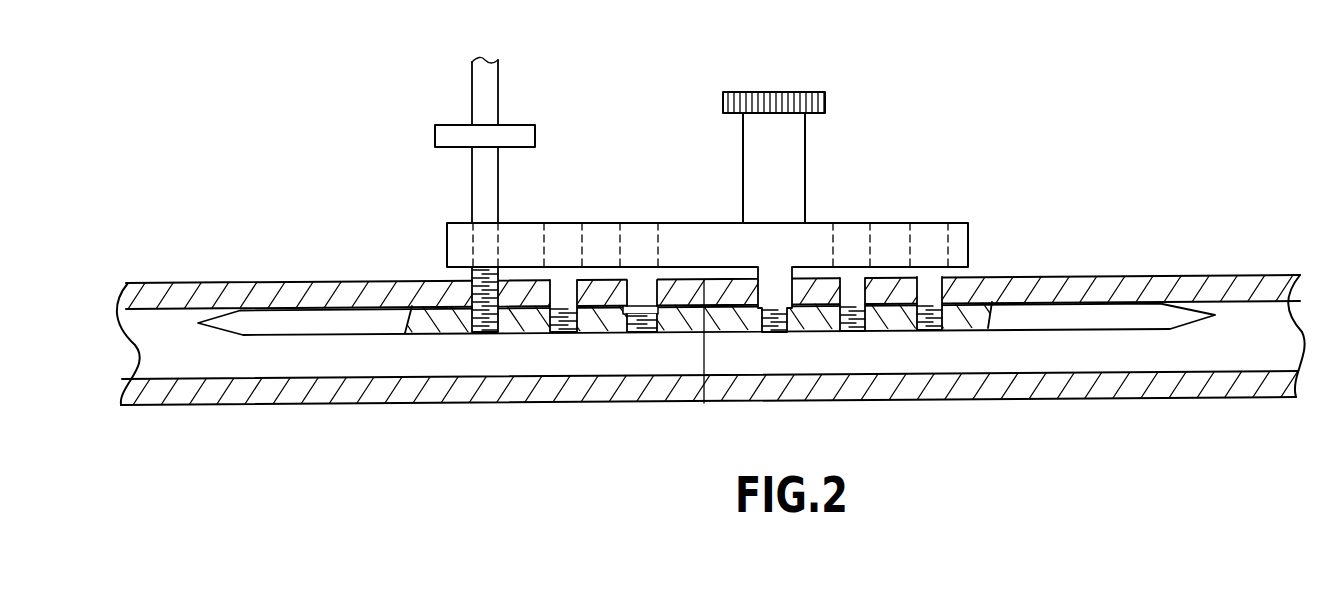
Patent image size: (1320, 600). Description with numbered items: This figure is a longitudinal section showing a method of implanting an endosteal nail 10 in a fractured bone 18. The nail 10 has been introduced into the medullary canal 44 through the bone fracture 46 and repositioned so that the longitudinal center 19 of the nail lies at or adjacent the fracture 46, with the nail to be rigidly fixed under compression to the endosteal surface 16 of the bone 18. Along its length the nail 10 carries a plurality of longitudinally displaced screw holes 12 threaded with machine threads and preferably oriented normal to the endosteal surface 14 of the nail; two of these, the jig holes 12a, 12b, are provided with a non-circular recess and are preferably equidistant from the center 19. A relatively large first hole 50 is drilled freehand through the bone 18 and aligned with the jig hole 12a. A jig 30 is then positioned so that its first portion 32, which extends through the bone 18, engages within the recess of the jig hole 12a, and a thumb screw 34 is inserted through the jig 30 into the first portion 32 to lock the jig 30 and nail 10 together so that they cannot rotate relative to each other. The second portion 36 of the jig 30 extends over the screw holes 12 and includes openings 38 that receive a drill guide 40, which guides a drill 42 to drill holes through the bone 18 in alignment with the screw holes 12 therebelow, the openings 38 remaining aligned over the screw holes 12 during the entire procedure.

The nail 10 is at (710, 336).
The screw holes 12 is at (473, 335).
The jig hole 12a is at (770, 335).
The jig hole 12b is at (628, 340).
The endosteal surface of the nail 14 is at (1062, 292).
The endosteal surface of the bone 16 is at (1256, 304).
The bone 18 is at (1219, 283).
The longitudinal center of the nail 19 is at (682, 340).
The jig 30 is at (681, 229).
The first portion of the jig 32 is at (800, 333).
The thumb screw 34 is at (802, 135).
The second portion of the jig 36 is at (515, 231).
The openings 38 is at (472, 258).
The drill guide 40 is at (472, 160).
The drill 42 is at (477, 194).
The medullary canal 44 is at (1040, 358).
The bone fracture 46 is at (706, 388).
The first hole 50 is at (808, 278).